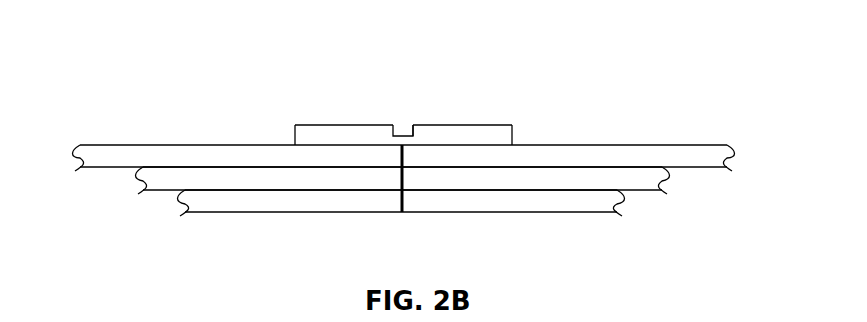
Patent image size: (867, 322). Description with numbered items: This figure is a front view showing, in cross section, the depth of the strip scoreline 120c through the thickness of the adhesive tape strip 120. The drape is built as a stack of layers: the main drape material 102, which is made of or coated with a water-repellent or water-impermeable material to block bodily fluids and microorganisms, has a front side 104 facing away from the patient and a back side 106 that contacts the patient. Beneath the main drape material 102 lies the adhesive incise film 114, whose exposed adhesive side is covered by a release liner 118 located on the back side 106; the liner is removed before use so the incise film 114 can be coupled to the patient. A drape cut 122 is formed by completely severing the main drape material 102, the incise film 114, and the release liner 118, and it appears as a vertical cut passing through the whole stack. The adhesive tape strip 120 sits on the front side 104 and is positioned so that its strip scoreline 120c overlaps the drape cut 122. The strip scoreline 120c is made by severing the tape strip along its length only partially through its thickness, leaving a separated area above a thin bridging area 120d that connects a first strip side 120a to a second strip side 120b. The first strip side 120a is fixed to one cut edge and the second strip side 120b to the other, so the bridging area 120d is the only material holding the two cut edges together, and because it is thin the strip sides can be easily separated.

The main drape material 102 is at (664, 152).
The front side 104 is at (618, 95).
The back side 106 is at (703, 213).
The adhesive incise film 114 is at (635, 182).
The release liner 118 is at (582, 205).
The adhesive tape strip 120 is at (407, 81).
The first strip side 120a is at (318, 125).
The second strip side 120b is at (497, 125).
The strip scoreline 120c is at (402, 121).
The bridging area 120d is at (413, 136).
The drape cut 122 is at (403, 170).